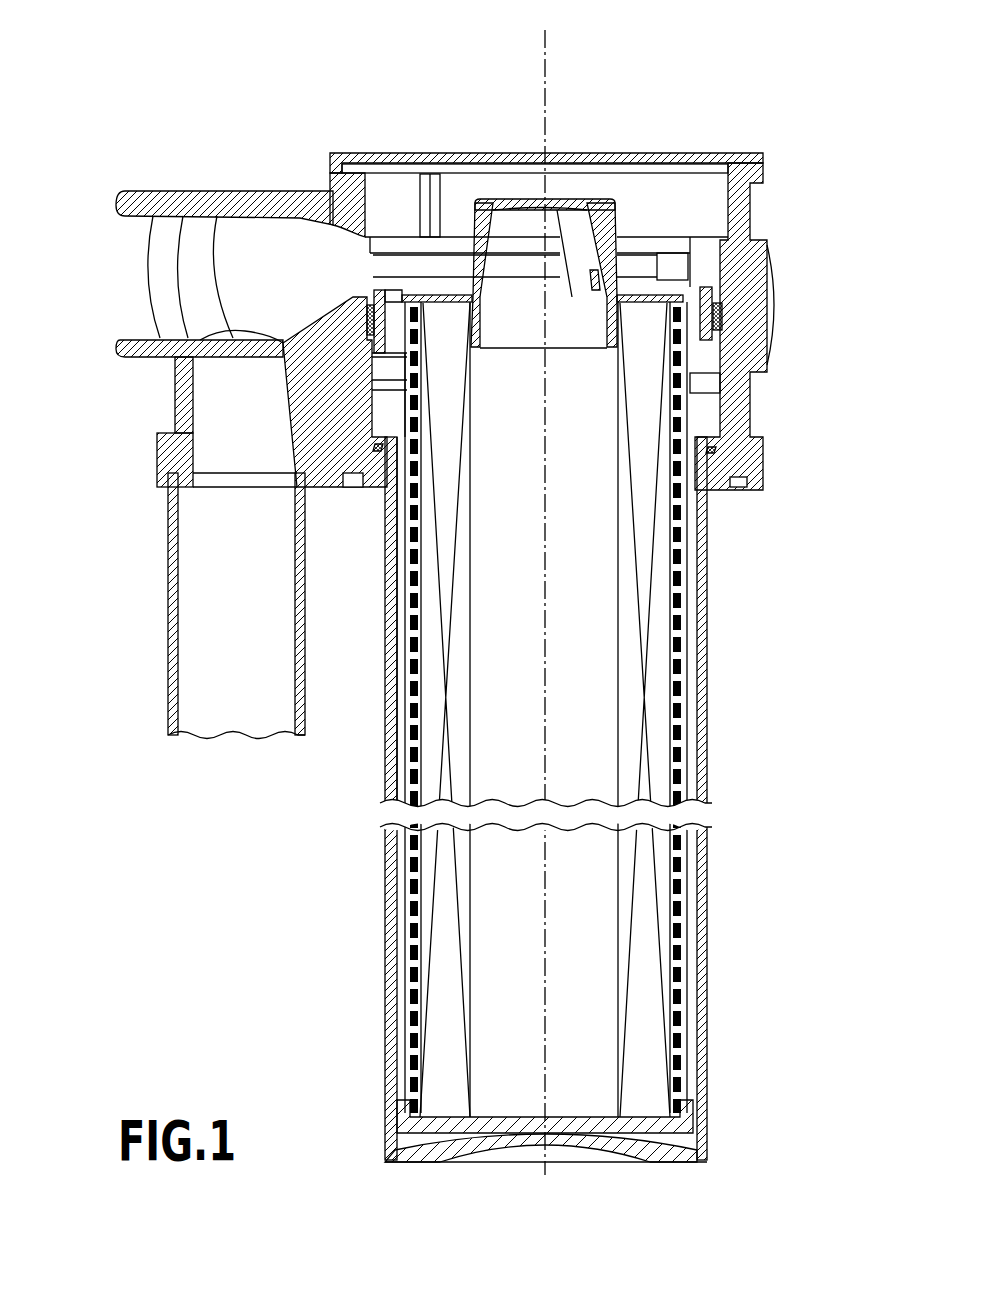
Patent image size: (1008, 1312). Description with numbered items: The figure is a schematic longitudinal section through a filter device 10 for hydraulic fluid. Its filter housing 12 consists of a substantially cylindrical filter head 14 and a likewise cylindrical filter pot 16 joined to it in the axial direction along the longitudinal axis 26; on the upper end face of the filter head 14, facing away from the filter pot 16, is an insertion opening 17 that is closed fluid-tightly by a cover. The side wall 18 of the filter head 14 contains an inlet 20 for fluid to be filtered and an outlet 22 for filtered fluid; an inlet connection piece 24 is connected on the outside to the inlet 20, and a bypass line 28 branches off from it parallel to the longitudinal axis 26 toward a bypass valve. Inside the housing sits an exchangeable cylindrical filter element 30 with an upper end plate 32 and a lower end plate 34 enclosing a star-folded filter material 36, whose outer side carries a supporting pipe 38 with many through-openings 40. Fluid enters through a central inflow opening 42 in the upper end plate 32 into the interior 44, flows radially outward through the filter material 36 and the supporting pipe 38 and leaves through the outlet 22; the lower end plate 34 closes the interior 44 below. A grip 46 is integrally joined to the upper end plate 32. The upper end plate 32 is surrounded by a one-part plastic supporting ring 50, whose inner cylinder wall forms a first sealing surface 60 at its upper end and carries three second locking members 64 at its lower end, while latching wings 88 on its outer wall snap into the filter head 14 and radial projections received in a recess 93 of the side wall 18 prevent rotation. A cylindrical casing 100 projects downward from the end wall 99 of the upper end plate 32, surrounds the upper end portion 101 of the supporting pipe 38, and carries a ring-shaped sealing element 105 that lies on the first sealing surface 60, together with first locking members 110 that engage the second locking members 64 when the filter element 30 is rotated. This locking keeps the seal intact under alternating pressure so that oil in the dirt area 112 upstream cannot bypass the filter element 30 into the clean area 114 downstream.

The filter device 10 is at (466, 607).
The filter housing 12 is at (626, 799).
The filter head 14 is at (762, 207).
The filter pot 16 is at (709, 718).
The insertion opening 17 is at (348, 156).
The side wall 18 is at (335, 178).
The inlet 20 is at (300, 192).
The outlet 22 is at (365, 442).
The inlet connection piece 24 is at (160, 191).
The longitudinal axis 26 is at (548, 30).
The bypass line 28 is at (176, 581).
The filter element 30 is at (477, 716).
The upper end plate 32 is at (637, 280).
The lower end plate 34 is at (432, 1133).
The filter material 36 is at (450, 1038).
The supporting pipe 38 is at (403, 971).
The through-openings 40 is at (412, 918).
The central inflow opening 42 is at (481, 303).
The interior 44 is at (505, 683).
The grip 46 is at (597, 200).
The supporting ring 50 is at (390, 236).
The first sealing surface 60 is at (705, 270).
The second locking members 64 is at (703, 347).
The latching wings 88 is at (385, 378).
The recess 93 is at (432, 190).
The end wall 99 is at (685, 267).
The casing 100 is at (718, 300).
The upper end portion 101 is at (421, 326).
The sealing element 105 is at (365, 295).
The first locking members 110 is at (738, 362).
The dirt area 112 is at (488, 197).
The clean area 114 is at (403, 472).